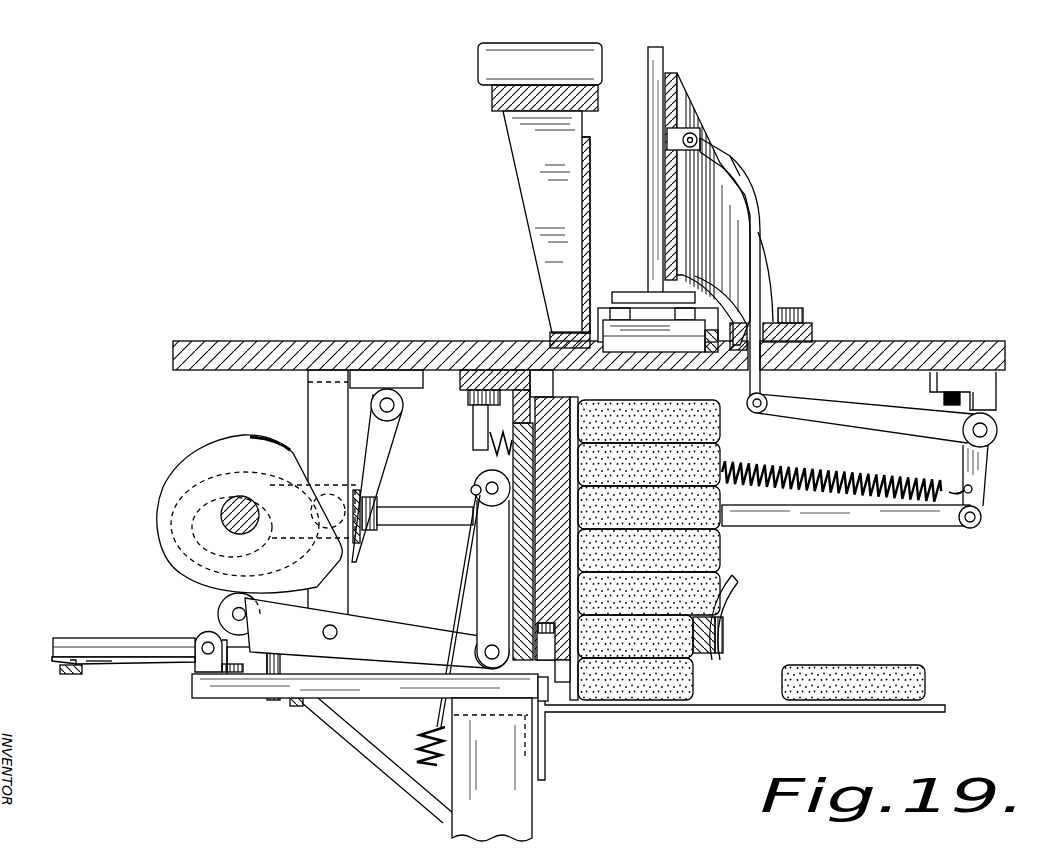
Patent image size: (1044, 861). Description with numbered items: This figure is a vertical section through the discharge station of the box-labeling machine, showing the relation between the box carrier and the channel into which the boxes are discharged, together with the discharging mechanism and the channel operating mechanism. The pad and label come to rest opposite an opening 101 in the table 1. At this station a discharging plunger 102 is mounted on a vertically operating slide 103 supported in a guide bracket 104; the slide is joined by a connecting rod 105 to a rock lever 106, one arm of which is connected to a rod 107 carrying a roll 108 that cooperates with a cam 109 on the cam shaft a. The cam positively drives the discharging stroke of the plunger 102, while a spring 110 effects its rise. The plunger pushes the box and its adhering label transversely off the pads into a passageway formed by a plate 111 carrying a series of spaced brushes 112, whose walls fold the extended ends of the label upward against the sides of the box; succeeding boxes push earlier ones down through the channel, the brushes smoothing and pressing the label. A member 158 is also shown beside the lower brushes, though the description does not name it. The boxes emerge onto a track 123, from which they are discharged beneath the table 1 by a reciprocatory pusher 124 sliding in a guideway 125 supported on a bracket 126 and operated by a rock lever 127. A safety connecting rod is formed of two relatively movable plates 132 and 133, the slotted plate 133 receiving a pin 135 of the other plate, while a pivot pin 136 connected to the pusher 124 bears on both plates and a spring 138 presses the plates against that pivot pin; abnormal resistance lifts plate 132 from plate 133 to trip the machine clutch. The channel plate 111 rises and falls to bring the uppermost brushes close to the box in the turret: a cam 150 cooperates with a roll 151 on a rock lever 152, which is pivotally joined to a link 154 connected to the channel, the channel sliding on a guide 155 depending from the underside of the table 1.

The table 1 is at (332, 352).
The opening 101 is at (545, 350).
The discharging plunger 102 is at (627, 297).
The vertically operating slide 103 is at (660, 197).
The guide bracket 104 is at (683, 103).
The connecting rod 105 is at (760, 212).
The rock lever 106 is at (903, 415).
The rod 107 is at (857, 512).
The roll 108 is at (380, 493).
The cam 109 is at (275, 433).
The spring 110 is at (817, 470).
The plate (channel) 111 is at (557, 467).
The brushes 112 is at (640, 420).
The track 123 is at (657, 710).
The reciprocatory pusher 124 is at (548, 707).
The guideway 125 is at (315, 688).
The bracket 126 is at (463, 783).
The rock lever 127 is at (377, 430).
The plate 132 is at (132, 643).
The slotted plate 133 is at (148, 658).
The pin 135 is at (58, 673).
The pivot pin 136 is at (208, 643).
The spring 138 is at (100, 664).
The cam 150 is at (328, 570).
The roll 151 is at (227, 600).
The rock lever 152 is at (390, 632).
The link 154 is at (478, 542).
The guide 155 is at (525, 392).
The stop 158 is at (728, 585).
The cam shaft a is at (225, 517).